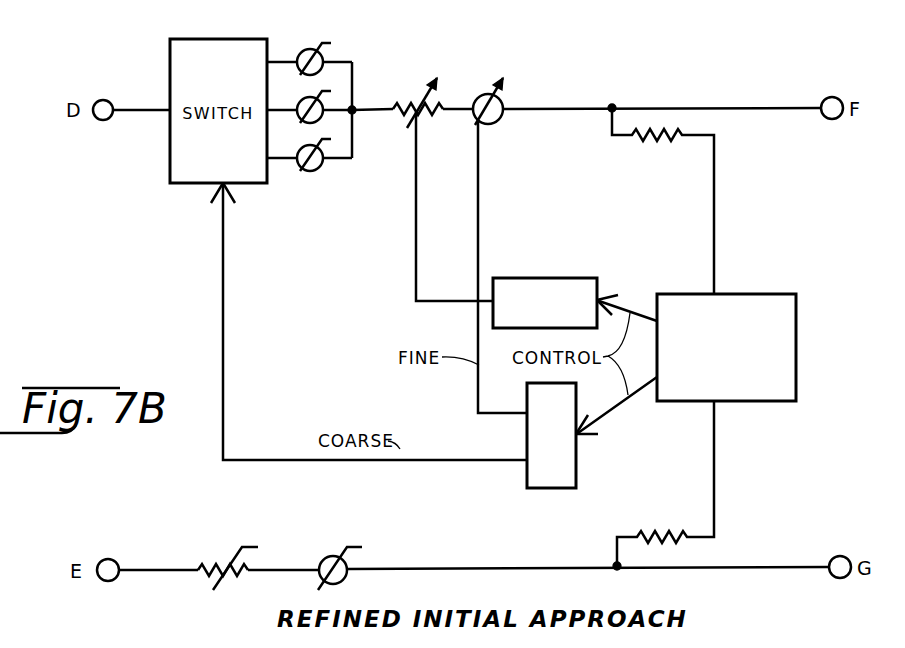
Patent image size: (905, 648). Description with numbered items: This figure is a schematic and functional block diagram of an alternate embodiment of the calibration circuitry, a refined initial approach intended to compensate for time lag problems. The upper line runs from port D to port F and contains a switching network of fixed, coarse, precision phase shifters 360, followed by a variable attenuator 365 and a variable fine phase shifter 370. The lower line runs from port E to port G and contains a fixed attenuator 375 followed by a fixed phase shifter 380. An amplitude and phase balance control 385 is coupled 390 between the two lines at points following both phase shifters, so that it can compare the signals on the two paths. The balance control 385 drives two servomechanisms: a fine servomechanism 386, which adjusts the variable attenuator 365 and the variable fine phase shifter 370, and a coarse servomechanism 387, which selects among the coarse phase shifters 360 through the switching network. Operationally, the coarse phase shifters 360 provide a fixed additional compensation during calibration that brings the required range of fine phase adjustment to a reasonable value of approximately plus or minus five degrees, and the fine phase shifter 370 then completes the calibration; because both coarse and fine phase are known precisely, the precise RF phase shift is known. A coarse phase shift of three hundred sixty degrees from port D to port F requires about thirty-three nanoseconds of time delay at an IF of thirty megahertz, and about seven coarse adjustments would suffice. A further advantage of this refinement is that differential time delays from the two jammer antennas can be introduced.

The switching network of fixed, coarse, precision phase shifters 360 is at (311, 44).
The variable attenuator 365 is at (398, 103).
The variable fine phase shifter 370 is at (508, 100).
The fixed attenuator 375 is at (207, 565).
The fixed phase shifter 380 is at (325, 560).
The amplitude and phase balance control 385 is at (796, 348).
The servomechanism 386 is at (553, 253).
The servomechanism 387 is at (576, 472).
The coupling 390 is at (617, 550).